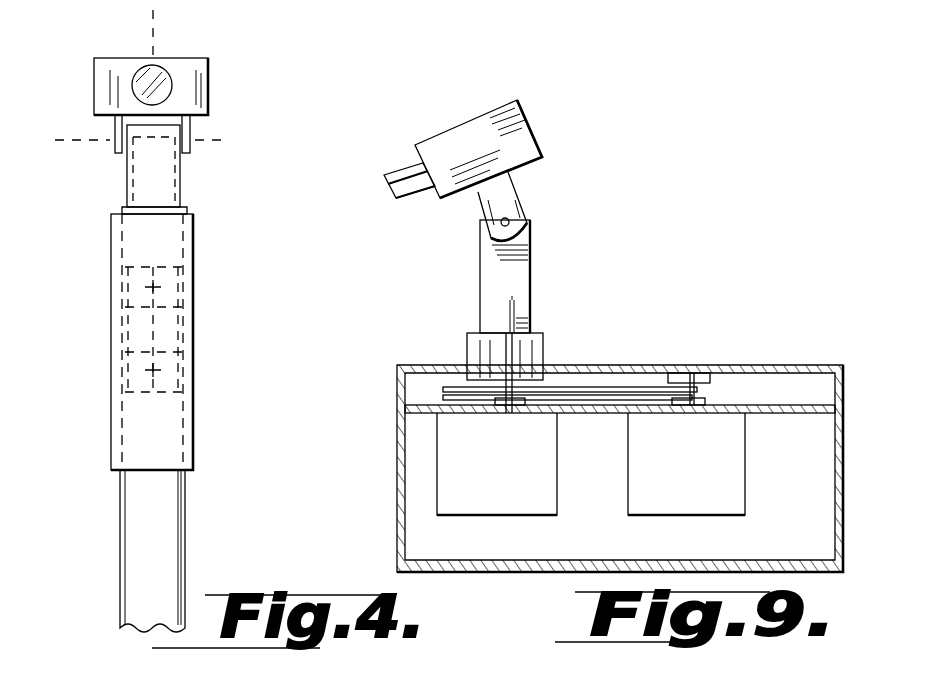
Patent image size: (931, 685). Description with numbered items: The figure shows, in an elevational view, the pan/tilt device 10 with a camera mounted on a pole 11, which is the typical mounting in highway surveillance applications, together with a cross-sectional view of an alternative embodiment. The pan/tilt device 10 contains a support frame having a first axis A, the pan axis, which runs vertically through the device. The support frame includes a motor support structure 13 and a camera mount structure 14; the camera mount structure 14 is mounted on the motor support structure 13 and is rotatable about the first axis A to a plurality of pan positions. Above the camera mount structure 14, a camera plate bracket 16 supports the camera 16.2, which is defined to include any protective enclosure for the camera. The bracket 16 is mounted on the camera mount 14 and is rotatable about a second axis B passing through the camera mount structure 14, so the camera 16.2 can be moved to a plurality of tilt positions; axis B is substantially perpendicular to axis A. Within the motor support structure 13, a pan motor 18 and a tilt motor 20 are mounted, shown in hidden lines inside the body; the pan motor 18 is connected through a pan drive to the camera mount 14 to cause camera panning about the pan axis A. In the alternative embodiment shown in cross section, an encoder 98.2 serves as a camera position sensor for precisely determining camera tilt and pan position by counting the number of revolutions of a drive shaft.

In FIG. 4, the first axis A is at (153, 33).
In FIG. 4, the second axis B is at (215, 140).
In FIG. 4, the camera 16.2 is at (208, 82).
In FIG. 4, the camera plate bracket 16 is at (115, 128).
In FIG. 4, the camera mount structure 14 is at (128, 178).
In FIG. 4, the pan/tilt device 10 is at (193, 233).
In FIG. 4, the motor support structure 13 is at (111, 320).
In FIG. 4, the tilt motor 20 is at (185, 285).
In FIG. 4, the pan motor 18 is at (193, 362).
In FIG. 4, the pole 11 is at (163, 503).
In FIG. 9, the encoder 98.2 is at (443, 399).